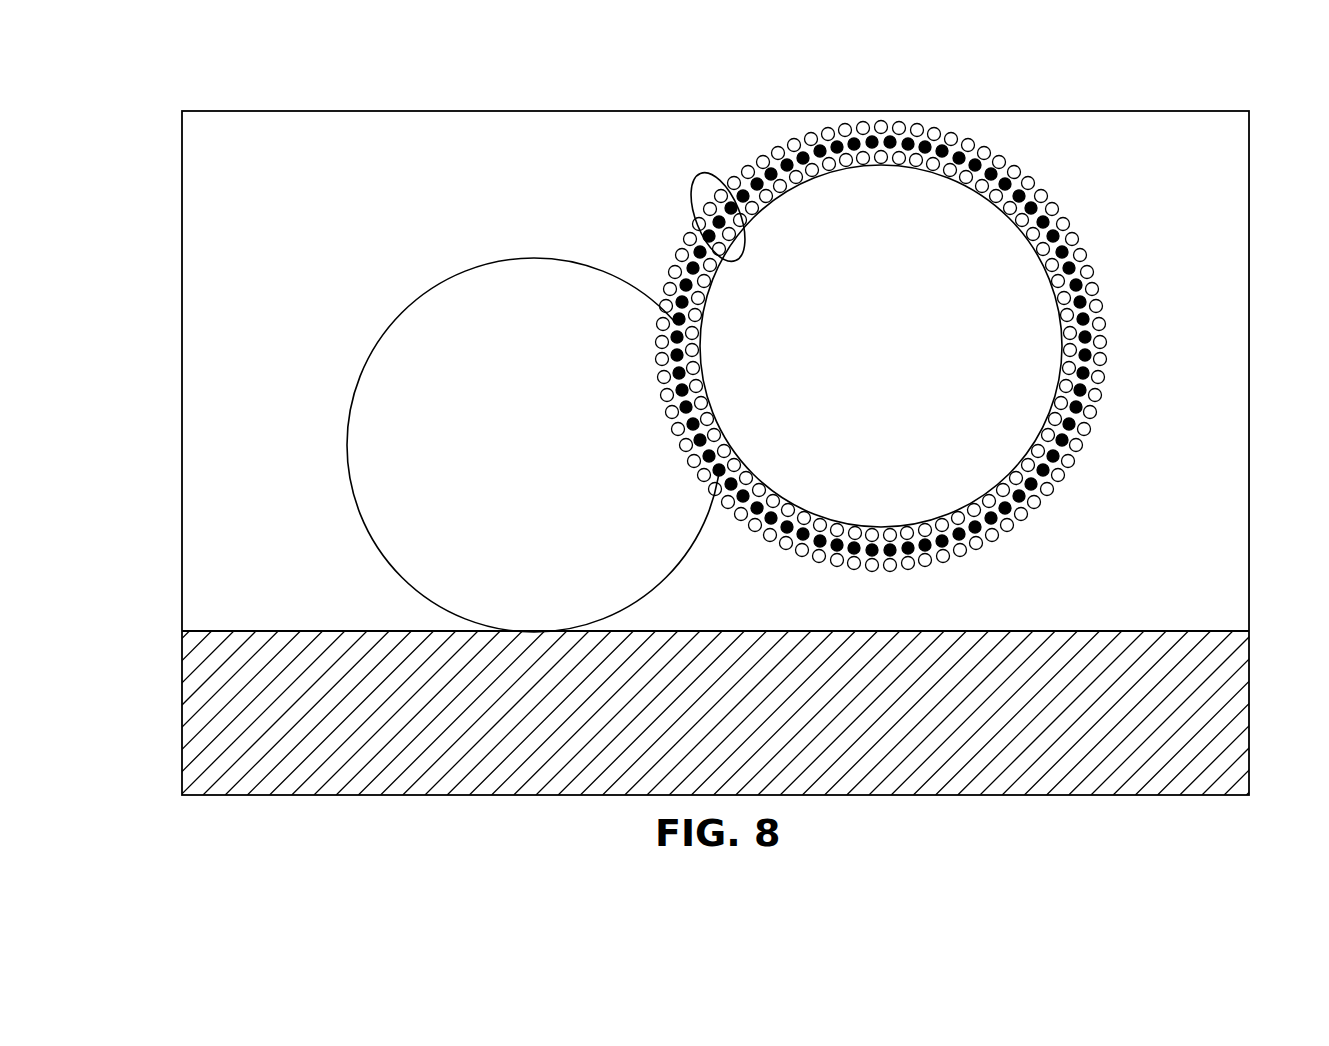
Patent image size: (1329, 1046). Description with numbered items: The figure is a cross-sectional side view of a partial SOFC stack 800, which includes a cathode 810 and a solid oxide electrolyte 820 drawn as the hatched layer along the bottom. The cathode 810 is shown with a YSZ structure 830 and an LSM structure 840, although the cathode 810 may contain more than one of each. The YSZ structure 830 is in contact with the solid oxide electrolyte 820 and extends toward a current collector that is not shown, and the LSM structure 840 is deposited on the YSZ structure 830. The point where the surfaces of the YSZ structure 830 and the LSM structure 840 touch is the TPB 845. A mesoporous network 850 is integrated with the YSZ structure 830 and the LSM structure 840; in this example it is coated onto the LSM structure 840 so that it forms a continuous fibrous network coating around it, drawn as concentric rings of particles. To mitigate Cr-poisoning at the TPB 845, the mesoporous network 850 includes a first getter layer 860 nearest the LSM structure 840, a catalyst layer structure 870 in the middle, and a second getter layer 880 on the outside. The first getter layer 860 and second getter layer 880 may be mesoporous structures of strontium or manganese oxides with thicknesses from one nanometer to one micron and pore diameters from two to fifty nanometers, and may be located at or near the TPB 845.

The partial SOFC stack 800 is at (191, 88).
The cathode 810 is at (1236, 111).
The solid oxide electrolyte 820 is at (1250, 712).
The YSZ structure 830 is at (380, 336).
The LSM structure 840 is at (897, 390).
The TPB 845 is at (706, 467).
The mesoporous network 850 is at (688, 198).
The first getter layer 860 is at (1063, 412).
The catalyst layer structure 870 is at (1091, 340).
The second getter layer 880 is at (1074, 229).